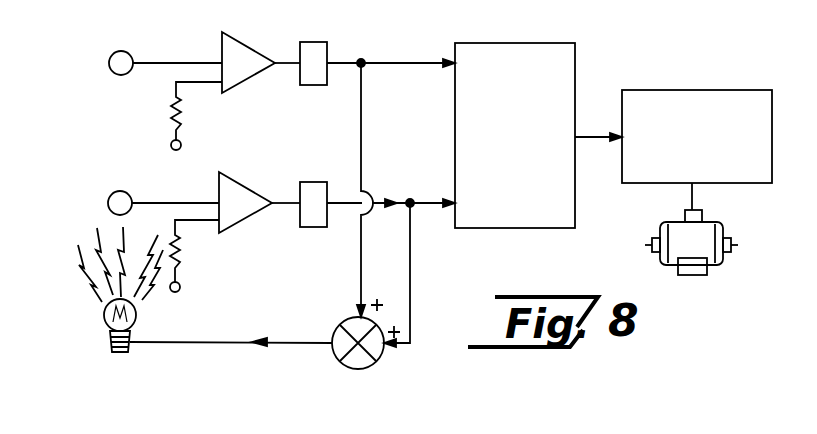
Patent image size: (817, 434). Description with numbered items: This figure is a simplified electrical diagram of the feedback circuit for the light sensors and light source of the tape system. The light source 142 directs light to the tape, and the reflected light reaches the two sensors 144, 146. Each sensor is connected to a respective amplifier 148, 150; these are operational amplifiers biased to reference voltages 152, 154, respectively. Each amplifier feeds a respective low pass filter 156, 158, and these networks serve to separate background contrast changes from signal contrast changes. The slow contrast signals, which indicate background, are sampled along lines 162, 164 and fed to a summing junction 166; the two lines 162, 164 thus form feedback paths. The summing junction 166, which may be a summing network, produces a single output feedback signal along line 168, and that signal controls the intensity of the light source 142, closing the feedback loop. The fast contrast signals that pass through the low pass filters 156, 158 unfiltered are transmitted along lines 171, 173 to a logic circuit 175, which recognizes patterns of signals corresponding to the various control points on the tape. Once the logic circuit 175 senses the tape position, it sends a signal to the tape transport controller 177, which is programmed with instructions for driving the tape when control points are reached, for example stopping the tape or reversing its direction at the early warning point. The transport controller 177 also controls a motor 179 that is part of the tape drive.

The light source 142 is at (137, 315).
The sensor 144 is at (132, 53).
The sensor 146 is at (134, 197).
The amplifier 148 is at (238, 55).
The amplifier 150 is at (240, 193).
The reference voltage 152 is at (183, 142).
The reference voltage 154 is at (183, 287).
The low pass filter 156 is at (317, 55).
The low pass filter 158 is at (316, 190).
The line 162 is at (364, 135).
The line 164 is at (410, 268).
The summing junction 166 is at (365, 363).
The line 168 is at (205, 343).
The line 171 is at (397, 68).
The line 173 is at (422, 200).
The logic circuit 175 is at (575, 210).
The tape transport controller 177 is at (748, 175).
The motor 179 is at (715, 262).